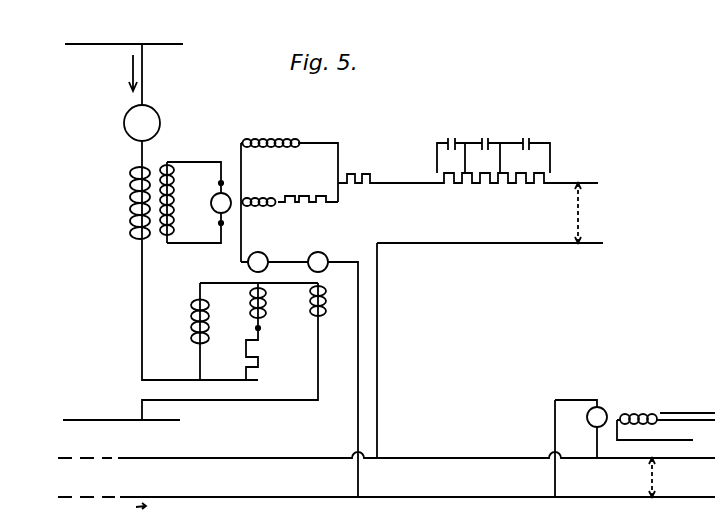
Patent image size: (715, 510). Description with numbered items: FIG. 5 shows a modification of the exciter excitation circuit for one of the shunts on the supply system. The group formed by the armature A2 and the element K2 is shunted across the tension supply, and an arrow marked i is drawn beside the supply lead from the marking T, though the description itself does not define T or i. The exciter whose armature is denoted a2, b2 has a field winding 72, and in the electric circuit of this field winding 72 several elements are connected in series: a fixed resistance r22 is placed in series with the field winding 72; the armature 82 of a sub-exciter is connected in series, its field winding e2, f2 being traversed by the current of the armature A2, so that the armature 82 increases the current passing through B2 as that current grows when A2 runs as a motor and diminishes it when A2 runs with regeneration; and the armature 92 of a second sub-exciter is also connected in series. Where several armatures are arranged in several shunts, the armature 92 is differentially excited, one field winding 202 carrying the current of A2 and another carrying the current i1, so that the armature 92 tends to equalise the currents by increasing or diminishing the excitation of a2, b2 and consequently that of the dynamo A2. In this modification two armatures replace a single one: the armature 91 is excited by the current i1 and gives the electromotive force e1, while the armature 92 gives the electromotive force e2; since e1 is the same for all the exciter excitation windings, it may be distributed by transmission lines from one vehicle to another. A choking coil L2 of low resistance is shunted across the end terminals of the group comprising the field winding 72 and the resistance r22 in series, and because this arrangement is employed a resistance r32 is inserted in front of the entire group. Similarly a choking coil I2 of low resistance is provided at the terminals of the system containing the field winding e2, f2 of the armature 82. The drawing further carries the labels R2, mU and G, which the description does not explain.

The supply terminal / line T is at (124, 31).
The current i is at (125, 73).
The armature A2 is at (127, 123).
The shunt group element K2 is at (126, 205).
The winding B2 is at (152, 233).
The exciter armature terminal a2 is at (210, 180).
The exciter armature terminal b2 is at (210, 227).
The choking coil L2 is at (289, 158).
The field winding 72 is at (262, 216).
The fixed resistance r22 is at (310, 215).
The resistance r32 is at (387, 193).
The resistance with shunt condensers R2 is at (517, 177).
The voltage drop mU is at (560, 213).
The sub-exciter armature 82 is at (264, 253).
The second sub-exciter armature 92 is at (327, 253).
The field winding 202 is at (328, 303).
The choking coil I2 is at (188, 331).
The field winding terminal e2 is at (248, 306).
The field winding terminal f2 is at (245, 350).
The ground / return line G is at (121, 434).
The sub-exciter armature 91 is at (585, 435).
The current i1 is at (666, 414).
The electromotive force e1 is at (640, 477).